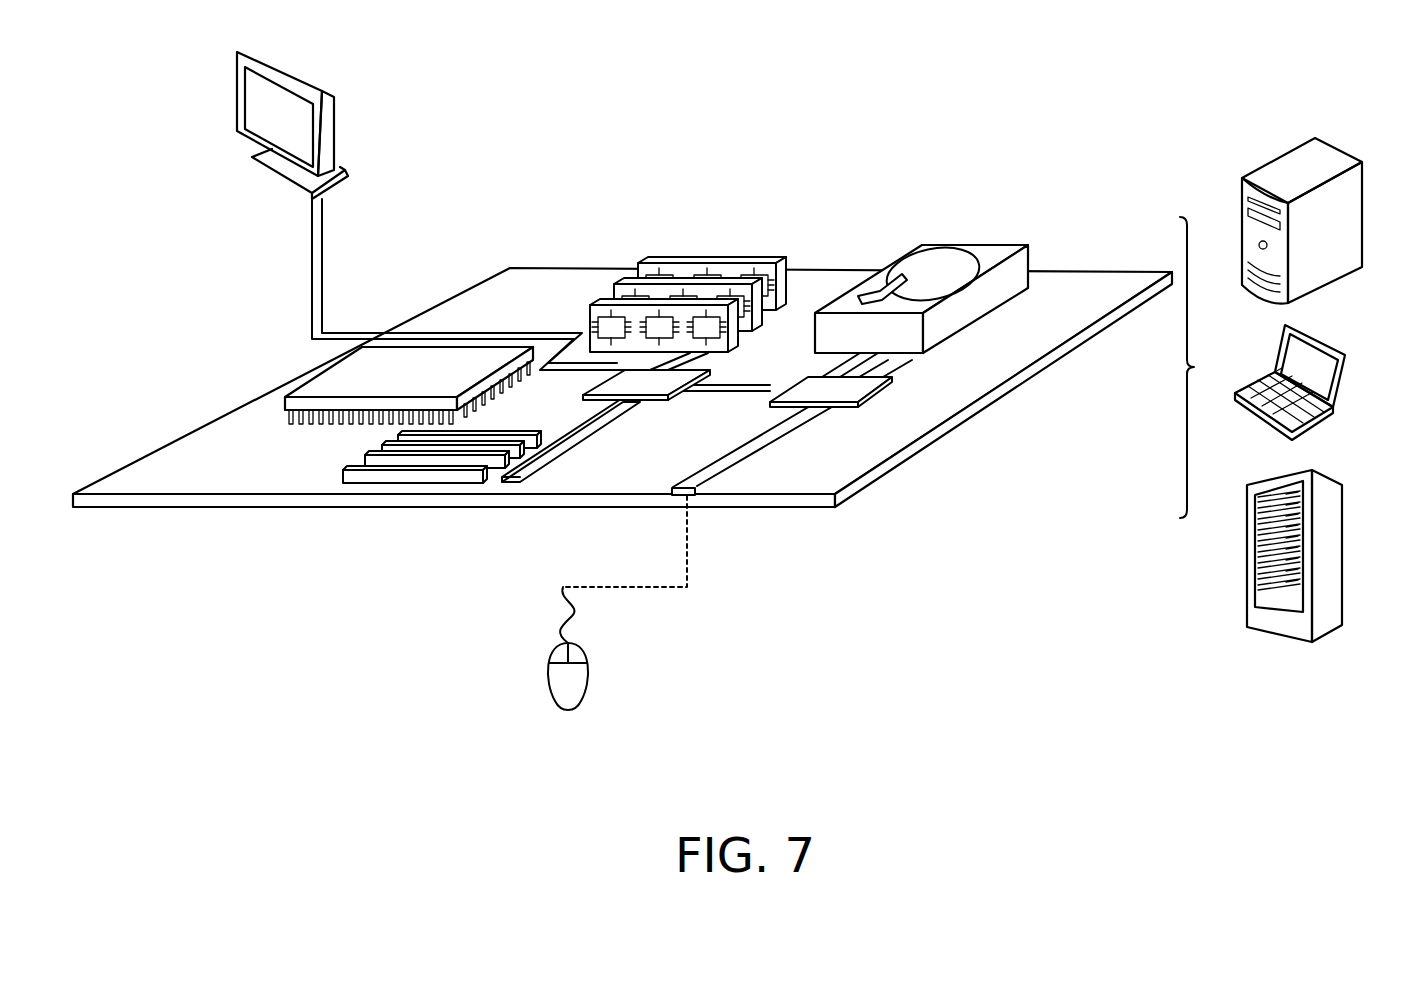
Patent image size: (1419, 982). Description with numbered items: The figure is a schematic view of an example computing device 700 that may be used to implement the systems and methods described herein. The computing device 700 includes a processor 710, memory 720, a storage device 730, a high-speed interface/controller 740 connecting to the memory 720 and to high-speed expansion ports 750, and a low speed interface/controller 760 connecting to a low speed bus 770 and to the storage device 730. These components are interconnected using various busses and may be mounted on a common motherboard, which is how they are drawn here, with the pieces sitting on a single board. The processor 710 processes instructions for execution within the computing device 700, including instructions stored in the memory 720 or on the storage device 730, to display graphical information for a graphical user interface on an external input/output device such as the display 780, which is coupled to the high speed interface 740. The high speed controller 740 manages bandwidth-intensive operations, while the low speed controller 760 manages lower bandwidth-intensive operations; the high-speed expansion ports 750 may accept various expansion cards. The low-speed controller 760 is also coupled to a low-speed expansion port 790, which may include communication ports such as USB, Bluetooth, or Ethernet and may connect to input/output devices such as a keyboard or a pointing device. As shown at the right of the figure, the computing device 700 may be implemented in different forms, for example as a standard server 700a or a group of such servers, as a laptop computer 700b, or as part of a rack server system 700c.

The computing device 700 is at (788, 115).
The standard server 700a is at (1272, 160).
The laptop computer 700b is at (1328, 340).
The rack server system 700c is at (1335, 533).
The processor 710 is at (285, 398).
The memory 720 is at (705, 262).
The storage device 730 is at (970, 245).
The high-speed interface/controller 740 is at (652, 402).
The high-speed expansion ports 750 is at (343, 470).
The low speed interface/controller 760 is at (822, 381).
The low speed bus 770 is at (778, 448).
The display 780 is at (235, 98).
The low-speed expansion port 790 is at (702, 497).